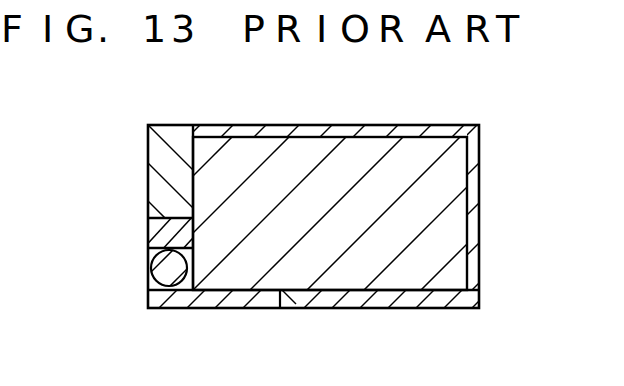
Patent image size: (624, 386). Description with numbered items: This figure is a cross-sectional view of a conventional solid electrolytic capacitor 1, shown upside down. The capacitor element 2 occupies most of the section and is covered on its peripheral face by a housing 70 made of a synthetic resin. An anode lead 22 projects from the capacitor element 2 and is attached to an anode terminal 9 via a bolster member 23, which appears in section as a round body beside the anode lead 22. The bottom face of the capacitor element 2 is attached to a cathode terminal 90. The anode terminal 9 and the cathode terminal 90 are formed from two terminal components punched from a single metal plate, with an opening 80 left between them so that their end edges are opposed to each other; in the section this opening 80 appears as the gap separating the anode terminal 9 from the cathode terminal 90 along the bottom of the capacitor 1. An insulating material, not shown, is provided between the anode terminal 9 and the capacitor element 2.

The solid electrolytic capacitor 1 is at (497, 197).
The capacitor element 2 is at (310, 147).
The anode terminal 9 is at (225, 302).
The anode lead 22 is at (155, 234).
The bolster member 23 is at (158, 272).
The housing 70 is at (158, 152).
The opening 80 is at (298, 302).
The cathode terminal 90 is at (395, 300).